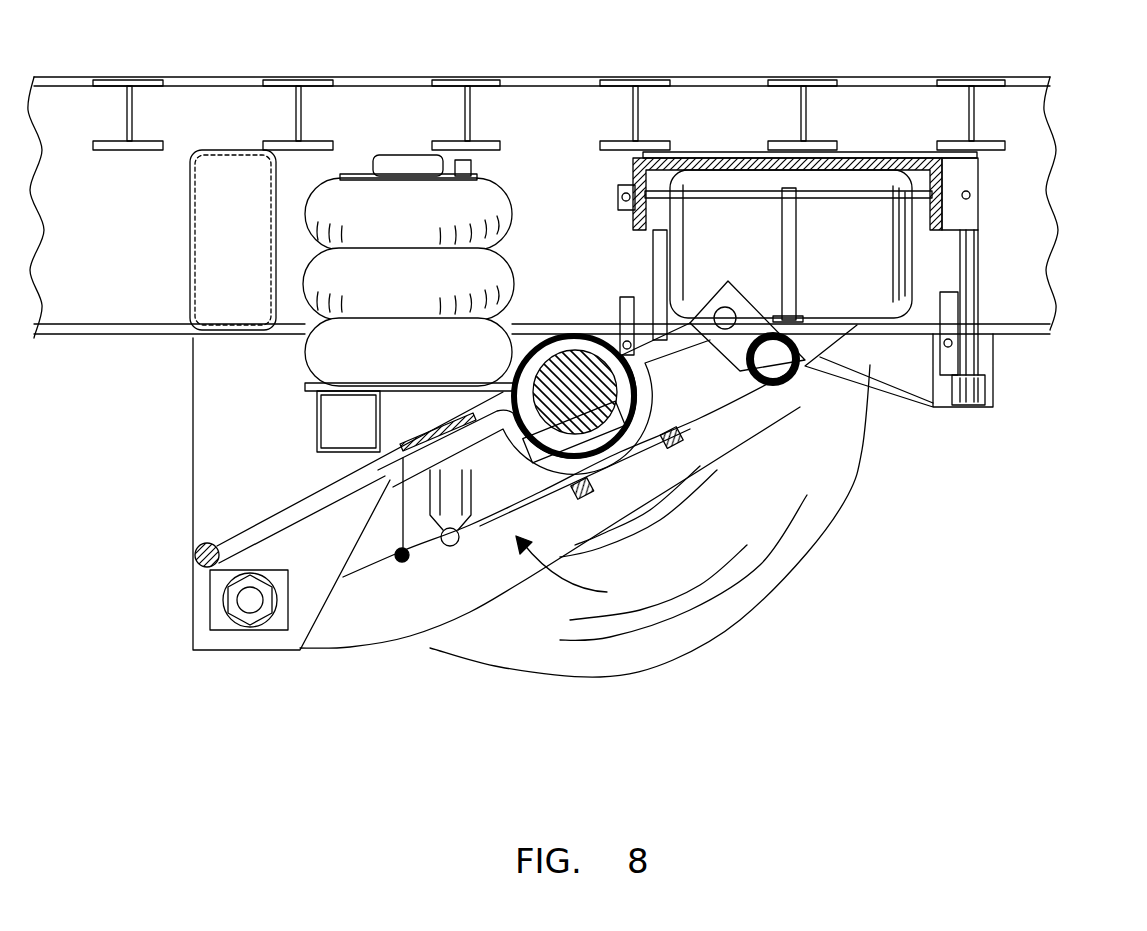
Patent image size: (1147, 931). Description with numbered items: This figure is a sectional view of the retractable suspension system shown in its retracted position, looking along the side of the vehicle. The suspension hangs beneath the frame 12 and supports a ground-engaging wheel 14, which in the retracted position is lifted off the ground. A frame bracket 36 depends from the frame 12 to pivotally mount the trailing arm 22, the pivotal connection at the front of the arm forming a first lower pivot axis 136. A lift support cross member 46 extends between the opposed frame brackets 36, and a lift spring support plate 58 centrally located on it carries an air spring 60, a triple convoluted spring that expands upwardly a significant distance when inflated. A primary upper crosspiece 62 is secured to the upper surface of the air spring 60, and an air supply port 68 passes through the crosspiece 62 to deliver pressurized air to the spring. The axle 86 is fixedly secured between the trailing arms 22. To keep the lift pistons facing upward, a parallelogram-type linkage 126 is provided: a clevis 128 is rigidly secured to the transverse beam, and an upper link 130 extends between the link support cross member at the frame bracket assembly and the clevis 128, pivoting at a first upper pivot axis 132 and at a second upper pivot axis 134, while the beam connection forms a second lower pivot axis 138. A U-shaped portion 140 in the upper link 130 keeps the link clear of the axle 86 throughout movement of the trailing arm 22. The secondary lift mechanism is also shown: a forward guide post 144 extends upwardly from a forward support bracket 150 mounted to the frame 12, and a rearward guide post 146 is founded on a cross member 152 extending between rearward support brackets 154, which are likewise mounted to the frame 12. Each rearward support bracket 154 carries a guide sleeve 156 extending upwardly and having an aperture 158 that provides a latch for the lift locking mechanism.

The frame 12 is at (742, 115).
The ground-engaging wheel 14 is at (497, 643).
The trailing arm 22 is at (375, 627).
The frame bracket 36 is at (218, 440).
The lift support cross member 46 is at (317, 410).
The lift spring support plate 58 is at (492, 338).
The air spring 60 is at (514, 208).
The primary upper crosspiece 62 is at (403, 152).
The air supply port 68 is at (473, 167).
The axle 86 is at (582, 395).
The parallelogram-type linkage 126 is at (585, 571).
The clevis 128 is at (744, 316).
The upper link 130 is at (318, 500).
The first upper pivot axis 132 is at (198, 547).
The second upper pivot axis 134 is at (725, 320).
The first lower pivot axis 136 is at (246, 615).
The second lower pivot axis 138 is at (773, 362).
The U-shaped portion 140 is at (615, 470).
The forward guide post 144 is at (658, 262).
The rearward guide post 146 is at (978, 307).
The forward support bracket 150 is at (640, 300).
The cross member 152 is at (968, 407).
The rearward support bracket 154 is at (930, 403).
The guide sleeve 156 is at (953, 298).
The aperture 158 is at (948, 347).